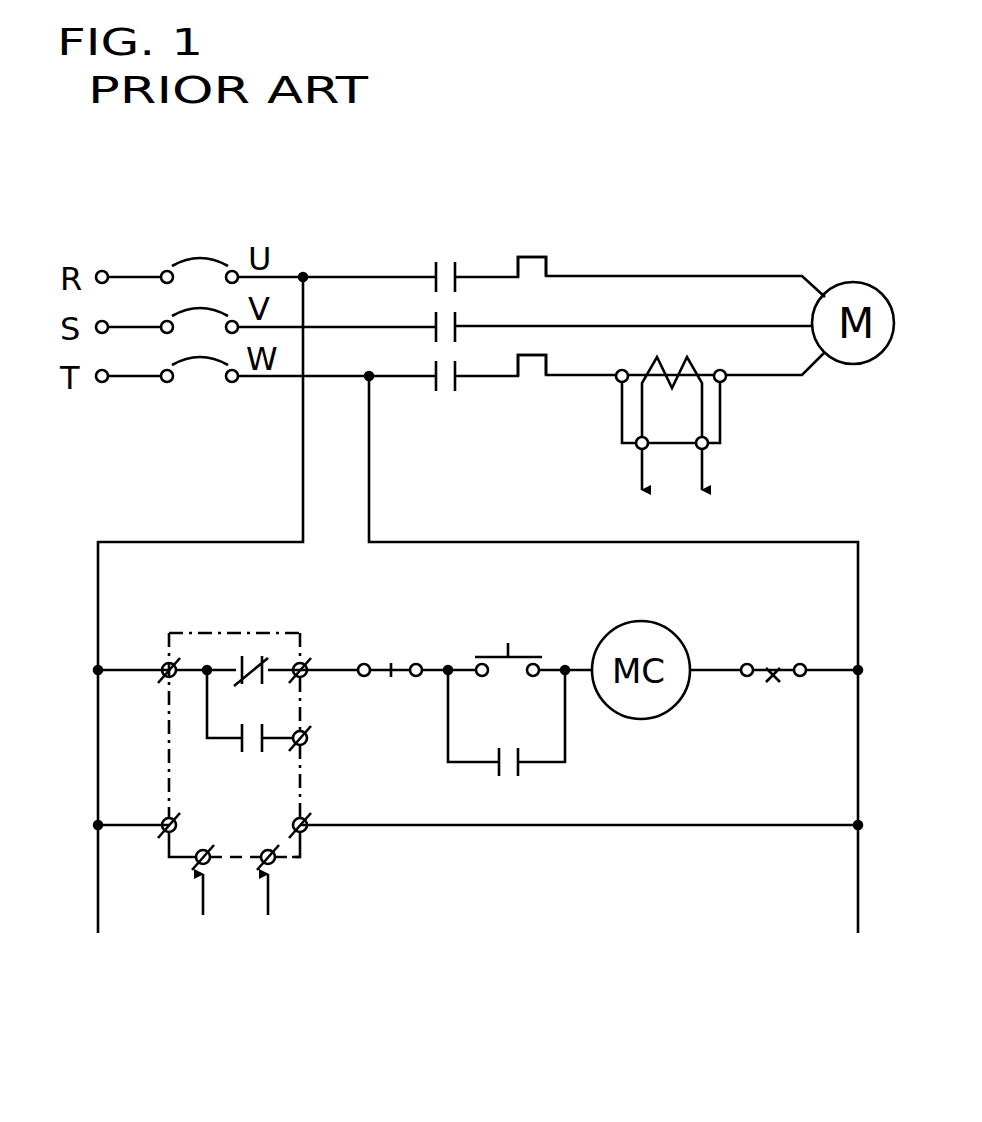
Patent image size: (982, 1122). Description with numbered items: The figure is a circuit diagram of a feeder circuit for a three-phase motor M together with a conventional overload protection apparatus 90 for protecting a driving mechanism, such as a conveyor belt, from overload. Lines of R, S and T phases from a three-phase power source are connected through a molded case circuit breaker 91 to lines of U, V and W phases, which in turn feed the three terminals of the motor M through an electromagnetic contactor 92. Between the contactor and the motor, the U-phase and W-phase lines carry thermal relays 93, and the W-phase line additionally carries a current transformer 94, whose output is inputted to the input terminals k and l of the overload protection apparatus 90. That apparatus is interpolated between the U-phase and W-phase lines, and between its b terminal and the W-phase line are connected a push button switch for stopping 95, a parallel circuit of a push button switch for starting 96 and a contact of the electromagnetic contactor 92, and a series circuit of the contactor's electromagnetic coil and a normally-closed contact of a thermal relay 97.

The overload protection apparatus 90 is at (270, 633).
The molded case circuit breaker 91 is at (167, 260).
The electromagnetic contactor 92 is at (423, 267).
The thermal relay 93 is at (547, 262).
The current transformer 94 is at (622, 410).
The push button switch for stopping 95 is at (397, 650).
The push button switch for starting 96 is at (523, 643).
The normally-closed contact of a thermal relay 97 is at (777, 660).